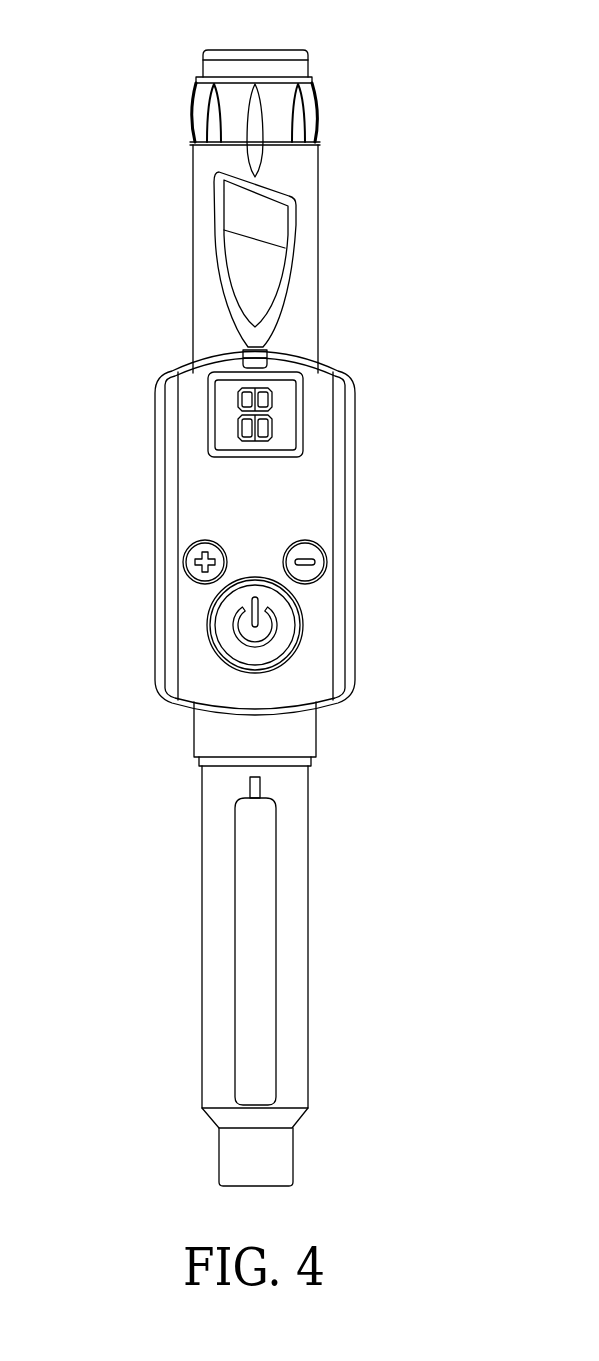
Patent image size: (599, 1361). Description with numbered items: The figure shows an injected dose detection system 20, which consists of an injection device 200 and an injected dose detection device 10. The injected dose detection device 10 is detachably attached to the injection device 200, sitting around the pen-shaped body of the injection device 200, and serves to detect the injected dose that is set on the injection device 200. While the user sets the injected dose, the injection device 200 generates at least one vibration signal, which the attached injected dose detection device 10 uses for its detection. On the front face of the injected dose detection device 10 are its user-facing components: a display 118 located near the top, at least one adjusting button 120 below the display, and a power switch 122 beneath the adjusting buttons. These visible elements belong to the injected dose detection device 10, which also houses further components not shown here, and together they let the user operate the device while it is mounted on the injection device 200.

The injected dose detection system 20 is at (426, 128).
The injection device 200 is at (302, 282).
The injected dose detection device 10 is at (362, 462).
The display 118 is at (227, 419).
The adjusting button 120 is at (185, 555).
The power switch 122 is at (283, 637).